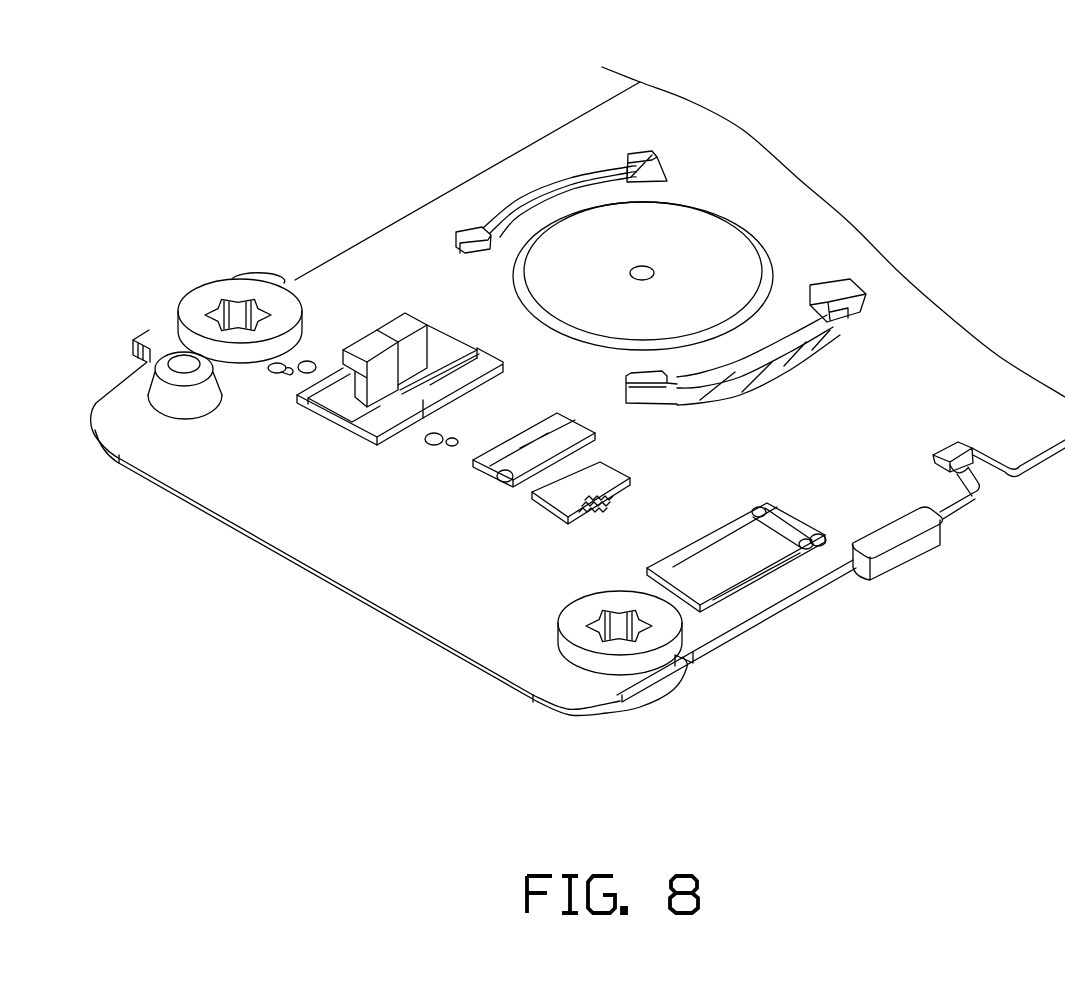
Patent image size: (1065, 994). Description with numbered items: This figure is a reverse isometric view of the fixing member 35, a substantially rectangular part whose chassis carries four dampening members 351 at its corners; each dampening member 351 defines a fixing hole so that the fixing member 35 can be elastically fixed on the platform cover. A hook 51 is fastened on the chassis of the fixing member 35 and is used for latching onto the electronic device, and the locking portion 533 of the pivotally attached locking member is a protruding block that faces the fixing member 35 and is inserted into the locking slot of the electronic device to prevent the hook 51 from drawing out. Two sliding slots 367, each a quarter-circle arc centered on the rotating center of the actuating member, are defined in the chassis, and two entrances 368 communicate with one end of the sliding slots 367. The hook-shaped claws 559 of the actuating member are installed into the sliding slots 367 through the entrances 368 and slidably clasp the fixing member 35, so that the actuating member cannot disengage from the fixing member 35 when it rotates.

The fixing member 35 is at (603, 130).
The dampening member 351 is at (221, 293).
The hook 51 is at (363, 344).
The locking portion 533 is at (438, 349).
The claw 559 is at (472, 238).
The sliding slot 367 is at (524, 206).
The entrance 368 is at (665, 163).